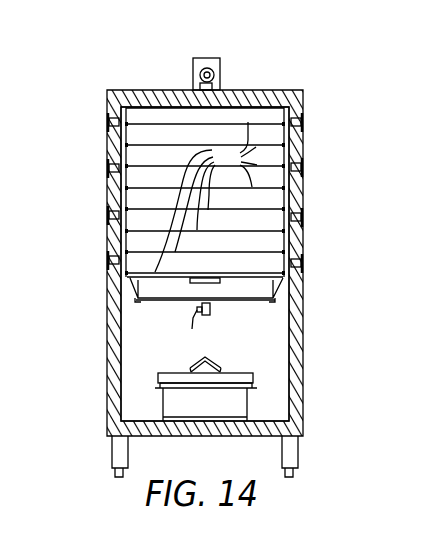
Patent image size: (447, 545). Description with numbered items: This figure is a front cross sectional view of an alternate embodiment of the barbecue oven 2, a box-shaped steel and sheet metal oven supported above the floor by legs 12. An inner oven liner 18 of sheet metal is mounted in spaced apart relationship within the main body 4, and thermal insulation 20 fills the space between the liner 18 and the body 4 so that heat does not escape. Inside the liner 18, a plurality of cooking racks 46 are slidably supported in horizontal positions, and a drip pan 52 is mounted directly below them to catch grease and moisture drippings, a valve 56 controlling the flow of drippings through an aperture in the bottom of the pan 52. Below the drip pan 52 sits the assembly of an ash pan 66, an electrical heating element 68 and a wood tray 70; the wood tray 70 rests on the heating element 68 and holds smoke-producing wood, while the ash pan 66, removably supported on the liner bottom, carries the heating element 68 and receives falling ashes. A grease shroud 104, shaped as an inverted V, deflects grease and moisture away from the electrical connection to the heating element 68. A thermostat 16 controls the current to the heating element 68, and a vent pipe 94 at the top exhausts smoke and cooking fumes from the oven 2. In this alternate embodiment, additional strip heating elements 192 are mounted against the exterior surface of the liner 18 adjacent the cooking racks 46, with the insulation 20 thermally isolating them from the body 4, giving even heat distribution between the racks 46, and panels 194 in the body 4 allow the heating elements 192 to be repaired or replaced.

The barbecue oven 2 is at (216, 250).
The main body 4 is at (107, 352).
The legs 12 is at (115, 452).
The thermostat 16 is at (224, 62).
The inner oven liner 18 is at (124, 333).
The thermal insulation 20 is at (133, 90).
The cooking racks 46 is at (206, 197).
The drip pan 52 is at (208, 279).
The valve 56 is at (214, 310).
The ash pan 66 is at (248, 407).
The electrical heating element 68 is at (208, 388).
The wood tray 70 is at (232, 377).
The vent pipe 94 is at (212, 87).
The grease shroud 104 is at (193, 362).
The heating elements 192 is at (108, 168).
The panels 194 is at (107, 260).